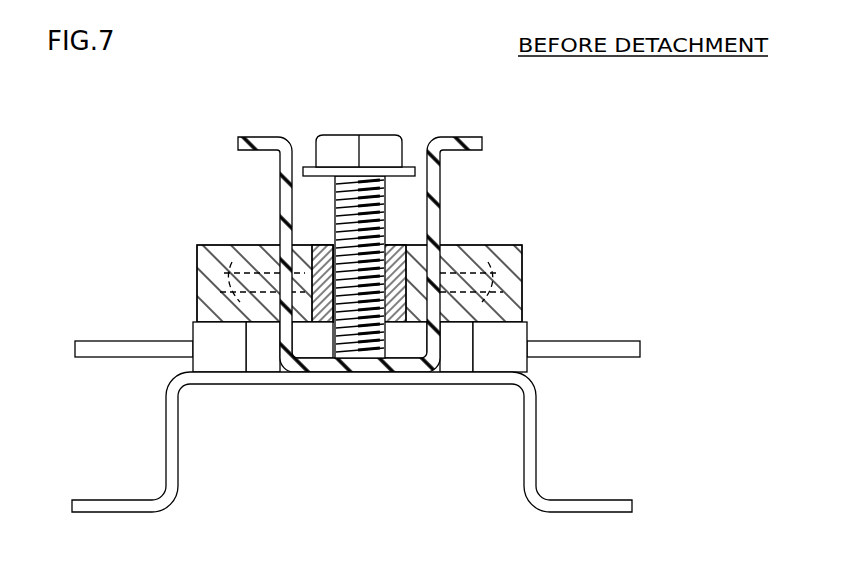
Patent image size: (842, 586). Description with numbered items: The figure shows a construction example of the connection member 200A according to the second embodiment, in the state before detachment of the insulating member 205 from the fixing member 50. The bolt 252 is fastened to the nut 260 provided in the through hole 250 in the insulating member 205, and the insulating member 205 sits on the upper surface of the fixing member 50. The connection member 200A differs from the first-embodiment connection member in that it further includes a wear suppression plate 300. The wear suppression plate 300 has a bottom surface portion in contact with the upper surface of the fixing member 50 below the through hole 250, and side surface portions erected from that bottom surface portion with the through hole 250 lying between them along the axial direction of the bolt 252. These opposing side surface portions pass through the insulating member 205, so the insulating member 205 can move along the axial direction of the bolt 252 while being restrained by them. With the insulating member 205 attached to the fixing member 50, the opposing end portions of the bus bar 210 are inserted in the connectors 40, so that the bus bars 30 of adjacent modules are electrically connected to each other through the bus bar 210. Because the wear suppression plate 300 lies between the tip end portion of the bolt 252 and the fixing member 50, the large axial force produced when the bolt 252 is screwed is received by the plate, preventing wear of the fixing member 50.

The connection member 200A is at (404, 97).
The bolt 252 is at (336, 140).
The wear suppression plate 300 is at (459, 140).
The bus bar 210 is at (233, 258).
The insulating member 205 is at (498, 244).
The bus bar 30 is at (92, 350).
The connector 40 is at (219, 356).
The through hole 250 is at (322, 318).
The nut 260 is at (393, 283).
The fixing member 50 is at (180, 448).